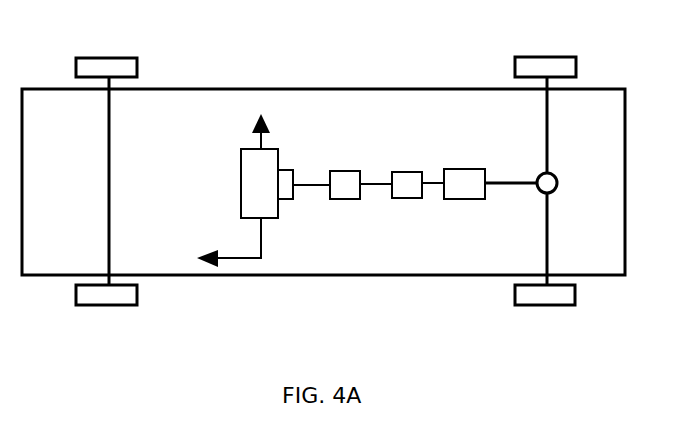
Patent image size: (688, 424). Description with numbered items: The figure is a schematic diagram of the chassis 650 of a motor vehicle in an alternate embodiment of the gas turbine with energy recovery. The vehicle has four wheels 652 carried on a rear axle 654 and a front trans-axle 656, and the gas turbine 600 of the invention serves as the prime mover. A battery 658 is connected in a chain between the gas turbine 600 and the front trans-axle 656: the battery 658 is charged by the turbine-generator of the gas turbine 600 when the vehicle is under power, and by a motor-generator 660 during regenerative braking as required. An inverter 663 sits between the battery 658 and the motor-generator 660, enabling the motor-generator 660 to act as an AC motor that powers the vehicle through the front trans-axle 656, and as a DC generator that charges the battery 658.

The chassis 650 is at (300, 72).
The wheels 652 is at (557, 70).
The rear axle 654 is at (105, 195).
The front trans-axle 656 is at (543, 143).
The gas turbine 600 is at (272, 153).
The battery 658 is at (340, 175).
The inverter 663 is at (400, 192).
The motor-generator 660 is at (462, 197).